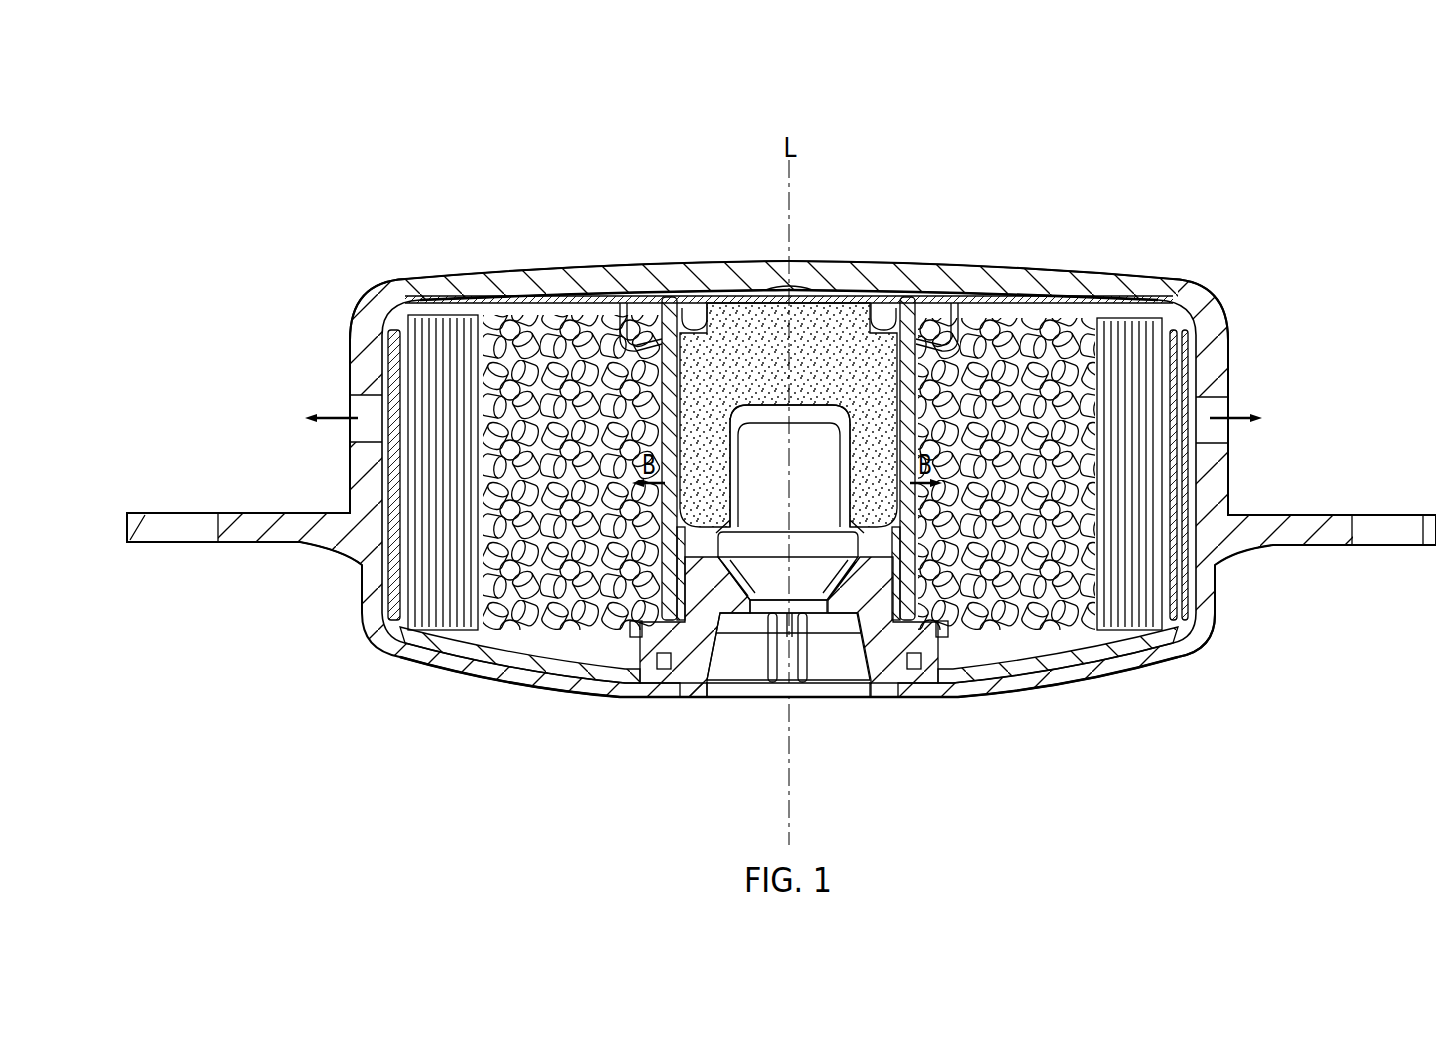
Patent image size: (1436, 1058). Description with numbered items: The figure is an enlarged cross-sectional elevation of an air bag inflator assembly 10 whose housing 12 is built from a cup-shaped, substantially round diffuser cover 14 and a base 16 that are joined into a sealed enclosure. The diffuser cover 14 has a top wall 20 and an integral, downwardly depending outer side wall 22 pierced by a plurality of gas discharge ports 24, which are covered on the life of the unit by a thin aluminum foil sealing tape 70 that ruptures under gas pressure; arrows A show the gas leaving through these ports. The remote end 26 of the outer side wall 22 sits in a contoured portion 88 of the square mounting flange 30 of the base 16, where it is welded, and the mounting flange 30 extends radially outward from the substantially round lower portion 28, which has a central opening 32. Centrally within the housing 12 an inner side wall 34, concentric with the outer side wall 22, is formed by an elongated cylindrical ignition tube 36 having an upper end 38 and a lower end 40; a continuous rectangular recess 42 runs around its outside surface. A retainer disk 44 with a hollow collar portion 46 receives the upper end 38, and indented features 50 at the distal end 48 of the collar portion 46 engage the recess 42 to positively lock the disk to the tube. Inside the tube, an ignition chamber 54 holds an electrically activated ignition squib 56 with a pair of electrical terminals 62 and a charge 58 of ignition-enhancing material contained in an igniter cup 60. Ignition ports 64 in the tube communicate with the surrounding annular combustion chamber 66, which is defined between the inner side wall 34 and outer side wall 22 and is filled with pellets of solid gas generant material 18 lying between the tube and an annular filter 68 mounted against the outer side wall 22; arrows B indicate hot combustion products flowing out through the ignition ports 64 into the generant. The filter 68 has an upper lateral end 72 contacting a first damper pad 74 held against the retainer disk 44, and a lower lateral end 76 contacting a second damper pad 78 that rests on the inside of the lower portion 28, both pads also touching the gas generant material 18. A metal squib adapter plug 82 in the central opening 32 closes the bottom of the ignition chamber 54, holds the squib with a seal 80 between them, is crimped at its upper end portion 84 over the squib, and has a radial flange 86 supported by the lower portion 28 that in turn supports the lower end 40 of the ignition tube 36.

The inflator assembly 10 is at (289, 236).
The housing 12 is at (1303, 355).
The diffuser cover 14 is at (347, 362).
The base 16 is at (392, 662).
The gas generant material 18 is at (1057, 675).
The top wall 20 is at (735, 264).
The outer side wall 22 is at (357, 462).
The gas discharge ports 24 is at (356, 404).
The remote end 26 is at (1218, 512).
The lower portion 28 is at (508, 680).
The mounting flange 30 is at (262, 540).
The central opening 32 is at (905, 662).
The inner side wall 34 is at (952, 340).
The ignition tube 36 is at (573, 645).
The upper end 38 is at (673, 296).
The lower end 40 is at (632, 648).
The recess 42 is at (662, 343).
The retainer disk 44 is at (510, 300).
The collar portion 46 is at (580, 297).
The distal end 48 is at (897, 380).
The indented features 50 is at (640, 300).
The ignition chamber 54 is at (1008, 660).
The ignition squib 56 is at (771, 582).
The charge 58 is at (832, 318).
The igniter cup 60 is at (890, 322).
The electrical terminals 62 is at (800, 667).
The ignition ports 64 is at (667, 423).
The combustion chamber 66 is at (1077, 338).
The filter 68 is at (385, 300).
The sealing tape 70 is at (1212, 372).
The upper lateral end 72 is at (455, 298).
The first damper pad 74 is at (928, 394).
The lower lateral end 76 is at (1157, 642).
The second damper pad 78 is at (1107, 690).
The seal 80 is at (655, 642).
The squib adapter plug 82 is at (885, 642).
The upper end portion 84 is at (736, 514).
The radial flange 86 is at (950, 655).
The contoured portion 88 is at (1240, 560).